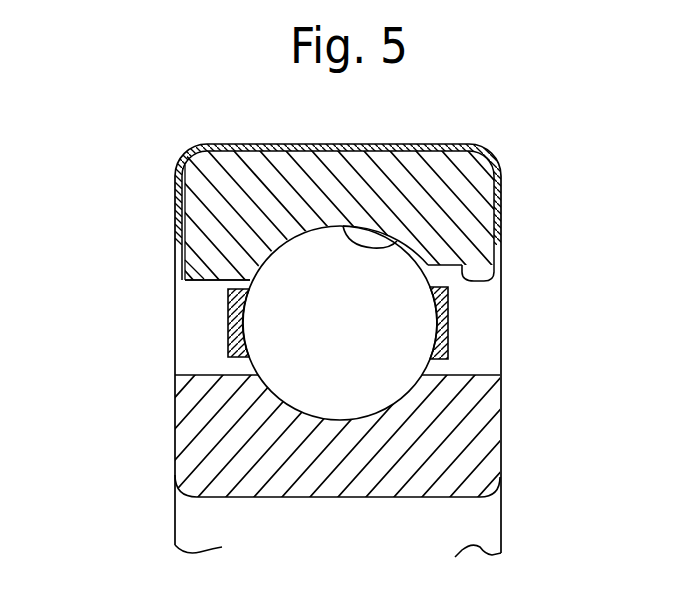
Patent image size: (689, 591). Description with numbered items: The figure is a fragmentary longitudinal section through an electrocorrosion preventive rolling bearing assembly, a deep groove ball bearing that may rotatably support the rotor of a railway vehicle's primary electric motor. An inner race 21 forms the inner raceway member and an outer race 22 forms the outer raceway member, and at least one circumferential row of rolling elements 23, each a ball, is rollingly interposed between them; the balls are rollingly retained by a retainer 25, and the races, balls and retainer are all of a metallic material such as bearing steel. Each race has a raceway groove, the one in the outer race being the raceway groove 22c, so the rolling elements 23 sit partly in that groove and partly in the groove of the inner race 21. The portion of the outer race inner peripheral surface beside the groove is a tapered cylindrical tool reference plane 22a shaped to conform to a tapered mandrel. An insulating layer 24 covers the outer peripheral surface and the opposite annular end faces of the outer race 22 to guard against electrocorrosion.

The inner race 21 is at (203, 462).
The outer race 22 is at (225, 249).
The tool reference plane 22a is at (215, 283).
The raceway groove 22c is at (397, 243).
The rolling elements 23 is at (290, 372).
The insulating layer 24 is at (397, 121).
The retainer 25 is at (228, 327).